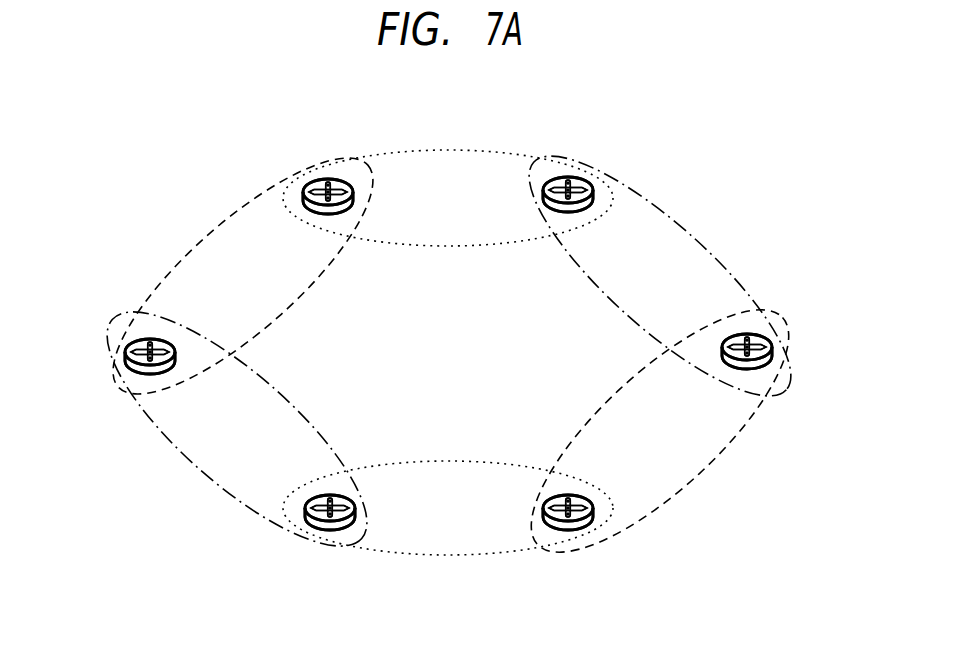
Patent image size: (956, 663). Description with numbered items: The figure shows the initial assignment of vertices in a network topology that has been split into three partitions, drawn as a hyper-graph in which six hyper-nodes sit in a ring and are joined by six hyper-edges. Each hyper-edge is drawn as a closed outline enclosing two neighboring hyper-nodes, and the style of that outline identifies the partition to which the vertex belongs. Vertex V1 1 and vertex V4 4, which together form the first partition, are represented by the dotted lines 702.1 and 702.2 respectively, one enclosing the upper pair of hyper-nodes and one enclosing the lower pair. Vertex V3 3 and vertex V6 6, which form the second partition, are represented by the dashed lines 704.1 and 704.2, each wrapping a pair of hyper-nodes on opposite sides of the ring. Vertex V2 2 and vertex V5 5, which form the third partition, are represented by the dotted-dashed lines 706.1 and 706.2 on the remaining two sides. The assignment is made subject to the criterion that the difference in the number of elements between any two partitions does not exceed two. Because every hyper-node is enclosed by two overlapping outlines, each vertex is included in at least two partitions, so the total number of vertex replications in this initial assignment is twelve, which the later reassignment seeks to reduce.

The dotted line 702.1 is at (447, 151).
The dotted line 702.2 is at (448, 556).
The dashed line 704.1 is at (693, 468).
The dashed line 704.2 is at (204, 243).
The dotted-dashed line 706.1 is at (700, 243).
The dotted-dashed line 706.2 is at (200, 468).
The vertex V1 1 is at (448, 195).
The vertex V2 2 is at (657, 273).
The vertex V3 3 is at (657, 432).
The vertex V4 4 is at (449, 514).
The vertex V5 5 is at (240, 434).
The vertex V6 6 is at (239, 276).